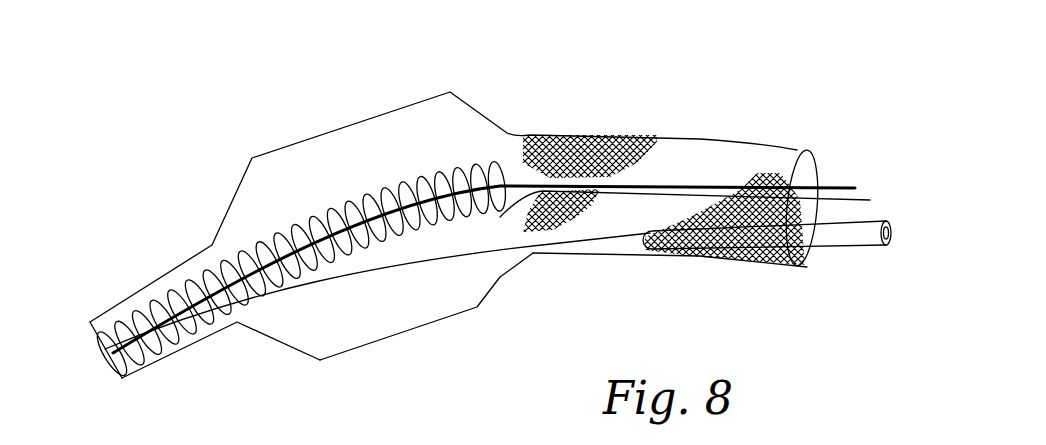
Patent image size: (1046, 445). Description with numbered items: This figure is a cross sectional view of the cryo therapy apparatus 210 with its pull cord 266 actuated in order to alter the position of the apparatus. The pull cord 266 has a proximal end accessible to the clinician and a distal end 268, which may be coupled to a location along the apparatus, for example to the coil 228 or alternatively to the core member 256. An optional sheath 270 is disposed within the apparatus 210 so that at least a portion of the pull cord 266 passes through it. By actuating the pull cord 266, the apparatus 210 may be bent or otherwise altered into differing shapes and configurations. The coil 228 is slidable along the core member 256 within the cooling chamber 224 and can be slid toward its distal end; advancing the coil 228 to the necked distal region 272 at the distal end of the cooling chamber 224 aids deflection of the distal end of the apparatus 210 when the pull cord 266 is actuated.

The cryo therapy apparatus 210 is at (188, 140).
The cooling chamber 224 is at (368, 104).
The coil 228 is at (480, 170).
The core member 256 is at (367, 203).
The pull cord 266 is at (493, 252).
The distal end 268 is at (847, 234).
The sheath 270 is at (826, 248).
The necked distal region 272 is at (192, 350).